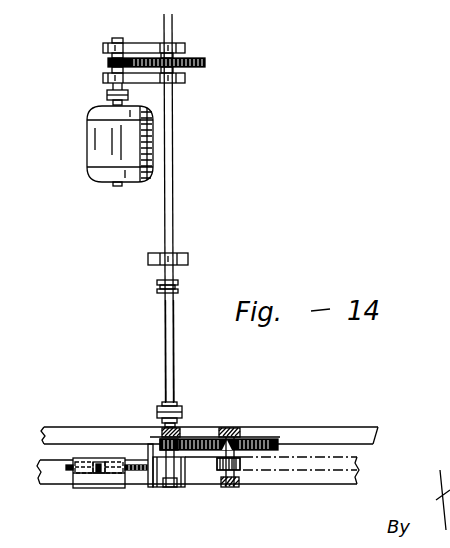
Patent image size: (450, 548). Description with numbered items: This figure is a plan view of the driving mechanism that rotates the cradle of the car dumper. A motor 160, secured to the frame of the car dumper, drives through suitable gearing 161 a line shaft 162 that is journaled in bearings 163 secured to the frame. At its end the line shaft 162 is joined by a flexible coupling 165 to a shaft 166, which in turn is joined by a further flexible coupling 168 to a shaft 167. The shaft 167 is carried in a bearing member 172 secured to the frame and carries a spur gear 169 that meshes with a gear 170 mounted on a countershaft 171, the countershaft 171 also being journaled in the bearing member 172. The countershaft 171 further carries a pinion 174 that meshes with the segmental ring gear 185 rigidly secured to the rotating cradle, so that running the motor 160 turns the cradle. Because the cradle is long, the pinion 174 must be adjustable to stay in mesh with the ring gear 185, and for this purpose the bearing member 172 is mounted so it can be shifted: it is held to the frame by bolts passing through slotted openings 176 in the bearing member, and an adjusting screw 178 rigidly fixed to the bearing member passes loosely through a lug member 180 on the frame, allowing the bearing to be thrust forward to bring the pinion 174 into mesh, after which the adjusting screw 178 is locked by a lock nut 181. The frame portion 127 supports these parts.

The upper plate 127 is at (363, 437).
The motor 160 is at (88, 158).
The gearing 161 is at (187, 58).
The line shaft 162 is at (174, 139).
The bearings 163 is at (177, 43).
The flexible couplings 165 is at (180, 286).
The shaft 166 is at (175, 346).
The shaft 167 is at (182, 430).
The flexible couplings 168 is at (180, 407).
The spur gear 169 is at (160, 441).
The gear 170 is at (262, 444).
The countershaft 171 is at (215, 462).
The bearing member 172 is at (229, 428).
The pinion 174 is at (243, 467).
The slotted openings 176 is at (168, 487).
The adjusting screw 178 is at (135, 471).
The lug member 180 is at (85, 483).
The lock nut 181 is at (99, 462).
The segmental ring gear 185 is at (366, 458).